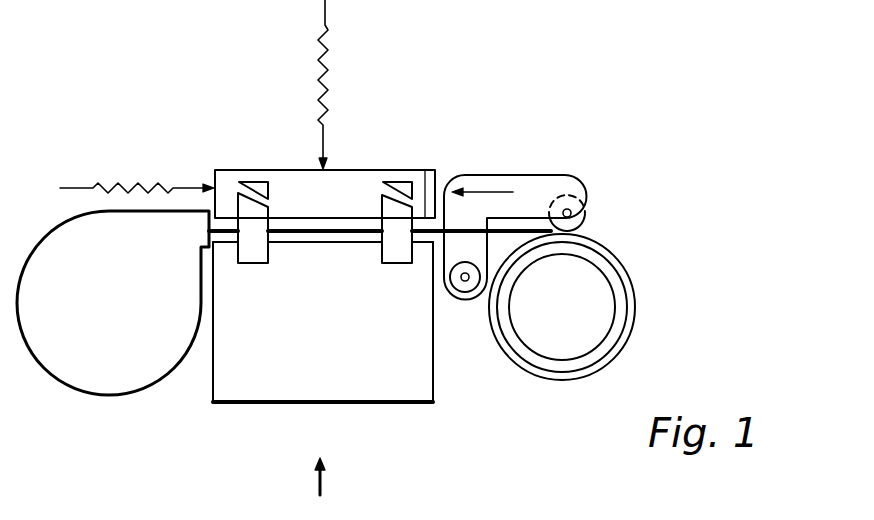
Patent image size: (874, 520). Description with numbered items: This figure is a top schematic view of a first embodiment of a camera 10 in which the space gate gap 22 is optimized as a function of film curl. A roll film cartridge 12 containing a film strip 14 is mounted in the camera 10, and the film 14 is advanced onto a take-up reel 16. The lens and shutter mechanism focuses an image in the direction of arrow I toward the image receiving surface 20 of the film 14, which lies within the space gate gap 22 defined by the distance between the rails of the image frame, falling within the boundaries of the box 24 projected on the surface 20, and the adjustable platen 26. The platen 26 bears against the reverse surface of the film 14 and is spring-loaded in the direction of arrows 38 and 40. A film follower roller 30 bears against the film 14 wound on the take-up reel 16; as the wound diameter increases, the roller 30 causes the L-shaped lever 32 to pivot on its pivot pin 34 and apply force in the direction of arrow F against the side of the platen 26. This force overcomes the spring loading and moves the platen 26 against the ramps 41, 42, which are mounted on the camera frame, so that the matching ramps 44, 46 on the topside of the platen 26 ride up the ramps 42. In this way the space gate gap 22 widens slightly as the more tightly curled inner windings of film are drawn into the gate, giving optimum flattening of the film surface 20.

The camera 10 is at (548, 56).
The roll film cartridge 12 is at (86, 314).
The film strip 14 is at (643, 315).
The take-up reel 16 is at (574, 319).
The image receiving surface 20 is at (323, 238).
The space gate gap 22 is at (349, 225).
The platen 24 is at (261, 372).
The platen 26 is at (322, 213).
The film follower roller 30 is at (598, 215).
The L-shaped lever 32 is at (537, 173).
The pivot pin 34 is at (471, 289).
The arrow 38 is at (388, 84).
The arrow 40 is at (160, 179).
The ramp 41 is at (253, 225).
The ramp 42 is at (400, 218).
The ramp 44 is at (266, 176).
The ramp 46 is at (411, 176).
The arrow F is at (494, 196).
The arrow I is at (357, 493).